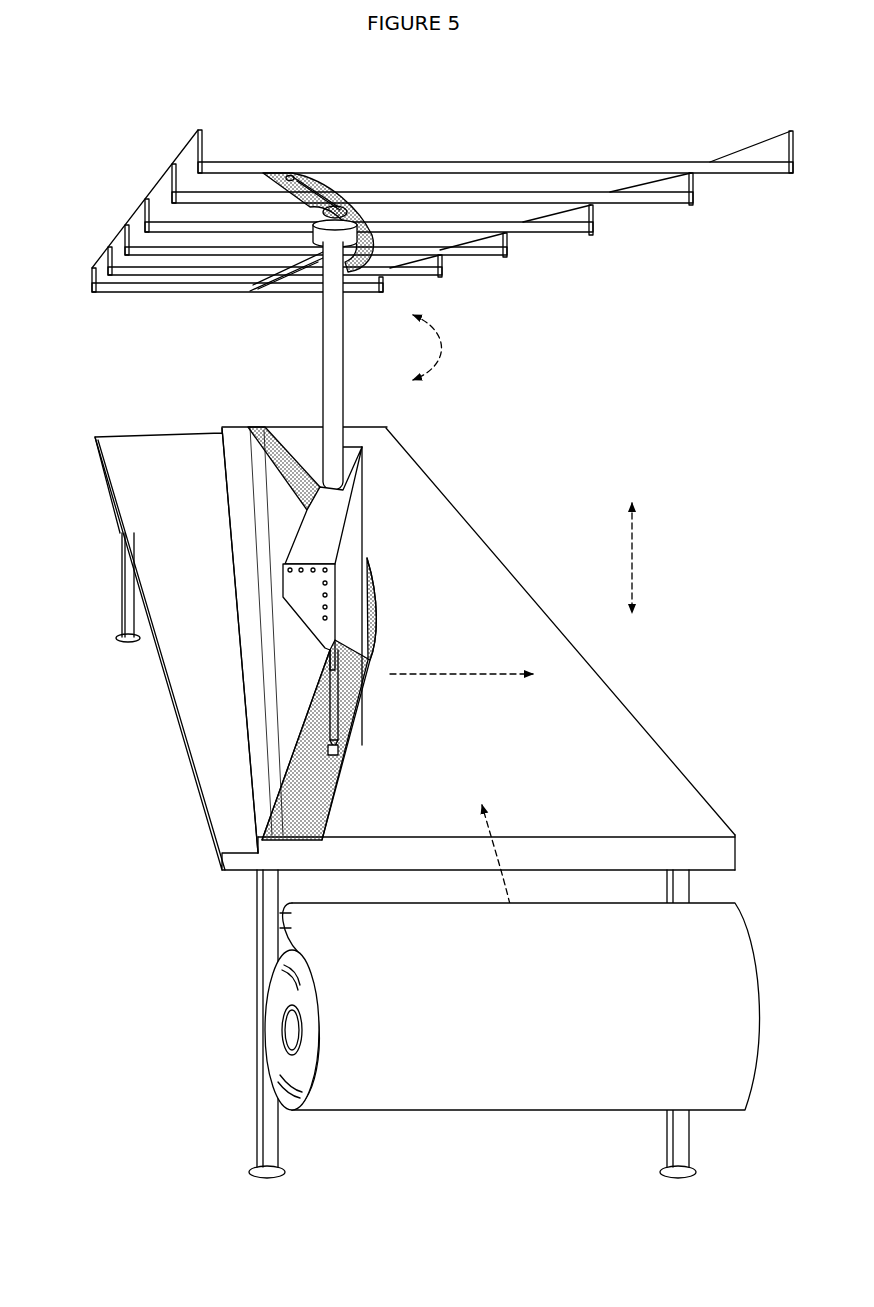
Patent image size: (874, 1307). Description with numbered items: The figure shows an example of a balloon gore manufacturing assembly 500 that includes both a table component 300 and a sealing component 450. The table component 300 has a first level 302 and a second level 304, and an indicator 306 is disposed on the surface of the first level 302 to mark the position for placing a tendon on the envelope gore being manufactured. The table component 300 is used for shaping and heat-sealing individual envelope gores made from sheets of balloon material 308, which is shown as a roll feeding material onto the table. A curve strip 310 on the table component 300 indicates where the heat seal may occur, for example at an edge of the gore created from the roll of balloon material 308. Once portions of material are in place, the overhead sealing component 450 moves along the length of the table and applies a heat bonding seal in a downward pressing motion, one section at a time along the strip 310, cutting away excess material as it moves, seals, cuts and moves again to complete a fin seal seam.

The assembly 500 is at (770, 34).
The table component 300 is at (668, 737).
The first level 302 is at (300, 425).
The second level 304 is at (135, 437).
The indicator 306 is at (265, 613).
The balloon material 308 is at (482, 1030).
The curve strip 310 is at (260, 835).
The sealing component 450 is at (368, 431).